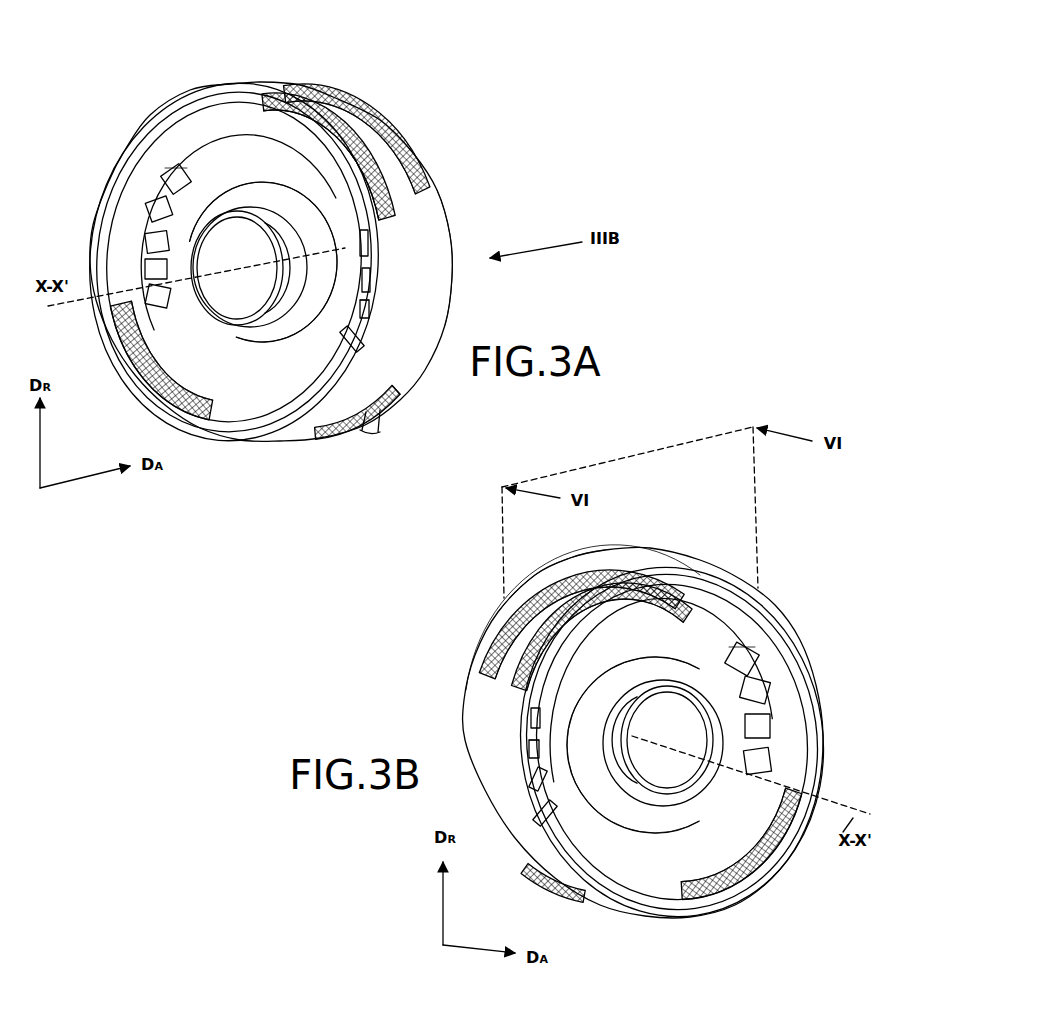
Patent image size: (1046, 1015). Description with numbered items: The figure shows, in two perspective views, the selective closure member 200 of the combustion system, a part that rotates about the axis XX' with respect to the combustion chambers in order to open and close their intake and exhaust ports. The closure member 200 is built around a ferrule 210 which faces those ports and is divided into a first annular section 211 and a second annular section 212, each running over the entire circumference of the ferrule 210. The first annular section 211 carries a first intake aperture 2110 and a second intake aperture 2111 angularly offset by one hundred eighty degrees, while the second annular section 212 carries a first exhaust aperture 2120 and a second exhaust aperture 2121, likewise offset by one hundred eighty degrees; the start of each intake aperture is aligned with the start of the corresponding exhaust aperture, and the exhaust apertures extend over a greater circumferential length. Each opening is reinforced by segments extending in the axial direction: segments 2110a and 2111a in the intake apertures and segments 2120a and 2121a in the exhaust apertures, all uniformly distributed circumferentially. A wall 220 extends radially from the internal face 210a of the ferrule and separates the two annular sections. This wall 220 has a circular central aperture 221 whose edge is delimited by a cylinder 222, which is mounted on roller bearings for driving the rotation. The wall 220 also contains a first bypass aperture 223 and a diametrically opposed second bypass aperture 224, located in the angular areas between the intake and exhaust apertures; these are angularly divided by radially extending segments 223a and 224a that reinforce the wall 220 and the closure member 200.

In FIG. 3A, the selective closure member 200 is at (336, 78).
In FIG. 3B, the selective closure member 200 is at (774, 584).
In FIG. 3A, the ferrule 210 is at (446, 293).
In FIG. 3B, the ferrule 210 is at (780, 640).
In FIG. 3A, the internal face of the ferrule 210a is at (110, 246).
In FIG. 3B, the internal face of the ferrule 210a is at (803, 784).
In FIG. 3A, the first annular section 211 is at (386, 220).
In FIG. 3B, the first annular section 211 is at (807, 718).
In FIG. 3A, the second annular section 212 is at (107, 310).
In FIG. 3B, the second annular section 212 is at (524, 704).
In FIG. 3A, the wall 220 is at (283, 415).
In FIG. 3B, the wall 220 is at (705, 605).
In FIG. 3A, the circular central aperture 221 is at (264, 297).
In FIG. 3B, the circular central aperture 221 is at (681, 768).
In FIG. 3A, the cylinder 222 is at (203, 303).
In FIG. 3B, the cylinder 222 is at (669, 692).
In FIG. 3A, the first bypass aperture 223 is at (355, 306).
In FIG. 3B, the first bypass aperture 223 is at (550, 820).
In FIG. 3A, the segments of the first bypass aperture 223a is at (362, 320).
In FIG. 3B, the segments of the first bypass aperture 223a is at (540, 738).
In FIG. 3A, the second bypass aperture 224 is at (143, 213).
In FIG. 3B, the second bypass aperture 224 is at (758, 680).
In FIG. 3A, the segments of the second bypass aperture 224a is at (173, 180).
In FIG. 3B, the segments of the second bypass aperture 224a is at (736, 660).
In FIG. 3A, the first intake aperture 2110 is at (290, 100).
In FIG. 3B, the first intake aperture 2110 is at (514, 624).
In FIG. 3A, the segments of the first intake aperture 2110a is at (396, 140).
In FIG. 3B, the segments of the first intake aperture 2110a is at (491, 660).
In FIG. 3A, the second intake aperture 2111 is at (140, 388).
In FIG. 3A, the segments of the second intake aperture 2111a is at (192, 398).
In FIG. 3A, the first exhaust aperture 2120 is at (309, 86).
In FIG. 3B, the first exhaust aperture 2120 is at (553, 572).
In FIG. 3A, the segments of the first exhaust aperture 2120a is at (357, 110).
In FIG. 3B, the segments of the first exhaust aperture 2120a is at (650, 575).
In FIG. 3A, the second exhaust aperture 2121 is at (400, 393).
In FIG. 3B, the second exhaust aperture 2121 is at (773, 863).
In FIG. 3A, the segments of the second exhaust aperture 2121a is at (370, 432).
In FIG. 3B, the segments of the second exhaust aperture 2121a is at (733, 861).